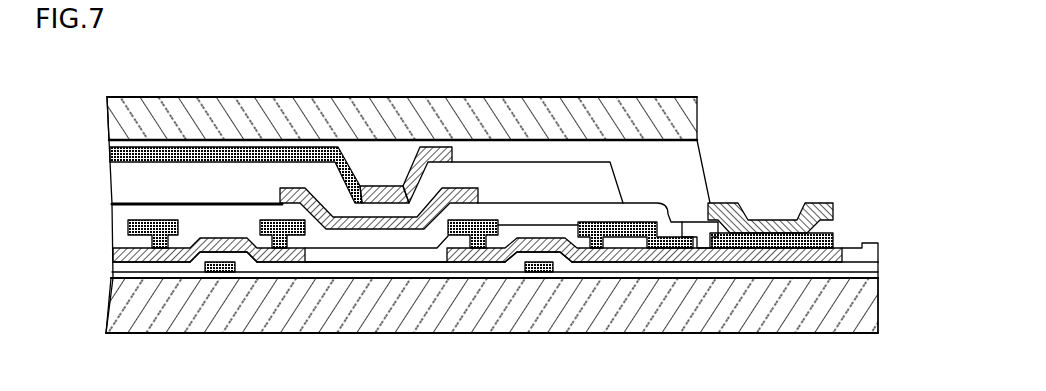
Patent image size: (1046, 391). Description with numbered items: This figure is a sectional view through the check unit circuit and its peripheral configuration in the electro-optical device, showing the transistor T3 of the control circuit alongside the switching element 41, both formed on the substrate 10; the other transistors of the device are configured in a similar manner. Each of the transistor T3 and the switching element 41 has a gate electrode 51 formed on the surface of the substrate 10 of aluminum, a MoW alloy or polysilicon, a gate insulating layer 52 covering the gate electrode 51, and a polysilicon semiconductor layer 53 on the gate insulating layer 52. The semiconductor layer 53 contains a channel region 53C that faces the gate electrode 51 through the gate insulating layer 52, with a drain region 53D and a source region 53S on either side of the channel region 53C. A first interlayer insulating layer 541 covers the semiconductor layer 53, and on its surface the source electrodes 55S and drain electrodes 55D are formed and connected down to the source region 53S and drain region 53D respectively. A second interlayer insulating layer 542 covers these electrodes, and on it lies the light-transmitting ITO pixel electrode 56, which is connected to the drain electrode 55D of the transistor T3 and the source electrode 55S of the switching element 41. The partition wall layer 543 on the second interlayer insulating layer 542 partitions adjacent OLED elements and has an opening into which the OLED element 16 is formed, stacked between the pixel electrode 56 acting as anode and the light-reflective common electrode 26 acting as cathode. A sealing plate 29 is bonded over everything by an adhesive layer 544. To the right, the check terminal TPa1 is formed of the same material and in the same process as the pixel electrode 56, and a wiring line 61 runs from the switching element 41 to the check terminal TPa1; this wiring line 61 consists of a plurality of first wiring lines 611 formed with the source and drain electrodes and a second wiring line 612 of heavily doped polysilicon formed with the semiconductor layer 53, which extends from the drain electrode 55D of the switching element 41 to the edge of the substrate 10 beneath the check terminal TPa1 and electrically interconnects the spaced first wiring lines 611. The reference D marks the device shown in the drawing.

The substrate 10 is at (108, 310).
The OLED element 16 is at (377, 203).
The common electrode 26 is at (411, 152).
The sealing plate 29 is at (634, 97).
The switching element 41 is at (571, 293).
The gate electrode 51 is at (220, 273).
The gate insulating layer 52 is at (110, 276).
The semiconductor layer 53 is at (110, 264).
The source region 53S is at (148, 256).
The channel region 53C is at (196, 252).
The drain region 53D is at (273, 263).
The first interlayer insulating layer 541 is at (110, 247).
The second interlayer insulating layer 542 is at (110, 216).
The partition wall layer 543 is at (110, 162).
The adhesive layer 544 is at (707, 157).
The source electrode 55S is at (110, 231).
The drain electrode 55D is at (290, 246).
The pixel electrode 56 is at (458, 193).
The wiring line 61 is at (719, 273).
The first wiring line 611 is at (684, 228).
The second wiring line 612 is at (770, 249).
The transistor T3 is at (251, 292).
The check terminal TPa1 is at (771, 220).
The display device D is at (724, 105).